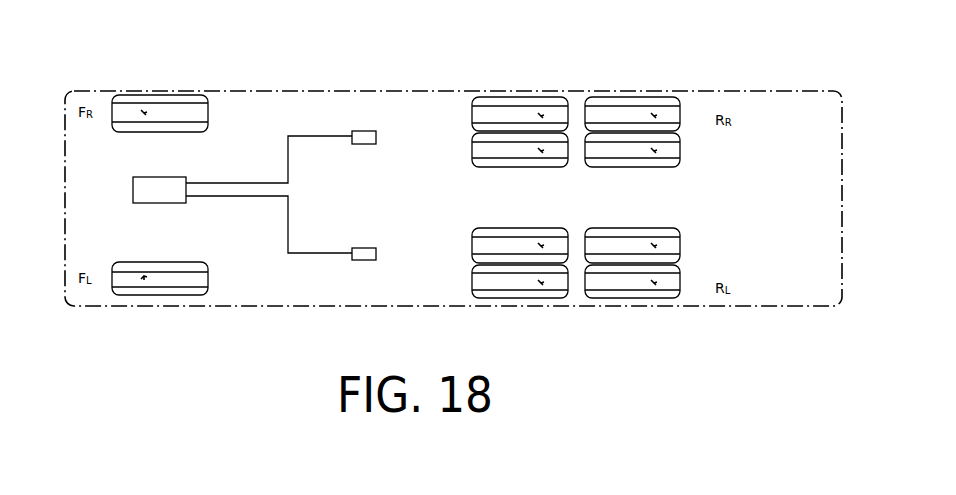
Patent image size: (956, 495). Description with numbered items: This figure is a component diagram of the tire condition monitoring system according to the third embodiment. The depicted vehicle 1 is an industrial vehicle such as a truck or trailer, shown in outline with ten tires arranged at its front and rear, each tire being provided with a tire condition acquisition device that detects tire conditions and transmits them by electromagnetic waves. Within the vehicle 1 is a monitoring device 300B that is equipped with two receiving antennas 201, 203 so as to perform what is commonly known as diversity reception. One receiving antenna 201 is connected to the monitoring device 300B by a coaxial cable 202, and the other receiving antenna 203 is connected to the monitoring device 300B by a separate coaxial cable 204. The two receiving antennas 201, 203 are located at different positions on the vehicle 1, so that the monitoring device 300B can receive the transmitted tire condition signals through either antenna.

The industrial vehicle 1 is at (358, 91).
The receiving antenna 201 is at (362, 145).
The coaxial cable 202 is at (224, 182).
The receiving antenna 203 is at (362, 261).
The coaxial cable 204 is at (228, 198).
The monitoring device 300B is at (151, 203).